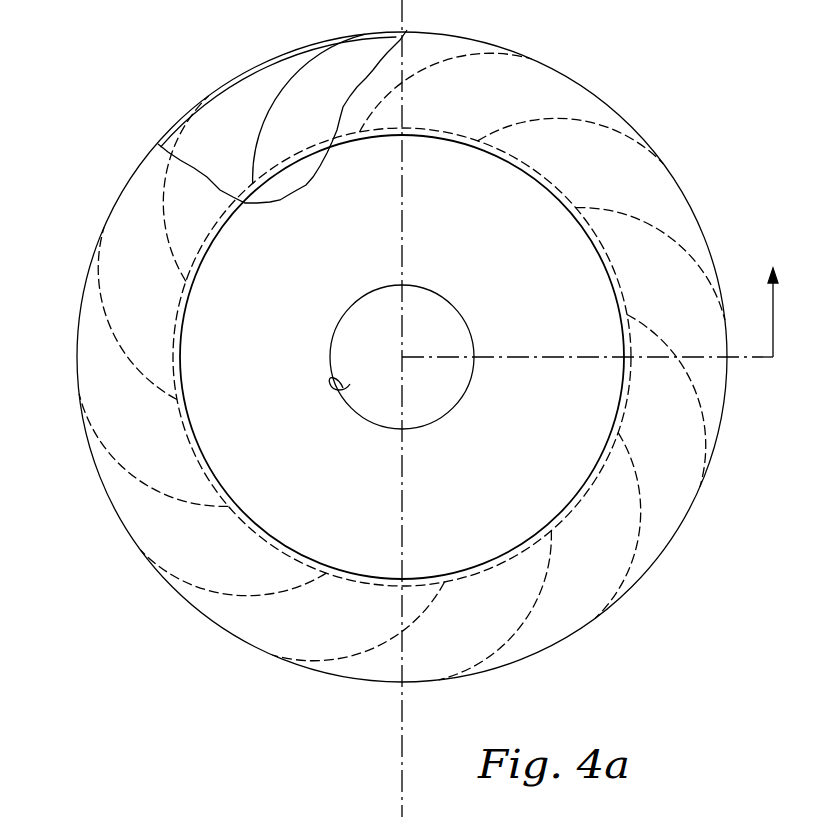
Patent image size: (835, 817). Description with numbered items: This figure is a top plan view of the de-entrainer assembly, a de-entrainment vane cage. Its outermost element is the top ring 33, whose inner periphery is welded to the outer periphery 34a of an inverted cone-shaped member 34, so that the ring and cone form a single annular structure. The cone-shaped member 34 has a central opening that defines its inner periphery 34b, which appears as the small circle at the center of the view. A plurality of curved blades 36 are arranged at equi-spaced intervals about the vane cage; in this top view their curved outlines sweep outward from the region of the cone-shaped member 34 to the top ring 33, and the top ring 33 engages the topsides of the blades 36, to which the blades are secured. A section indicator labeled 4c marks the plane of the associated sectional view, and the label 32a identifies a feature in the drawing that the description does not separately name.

The top ring 33 is at (97, 396).
The shroud inlet edge 32a is at (182, 342).
The inverted cone-shaped member 34 is at (338, 263).
The outer periphery 34a is at (188, 418).
The inner periphery 34b is at (343, 388).
The curved blades 36 is at (190, 117).
The section view indicator 4c is at (775, 299).